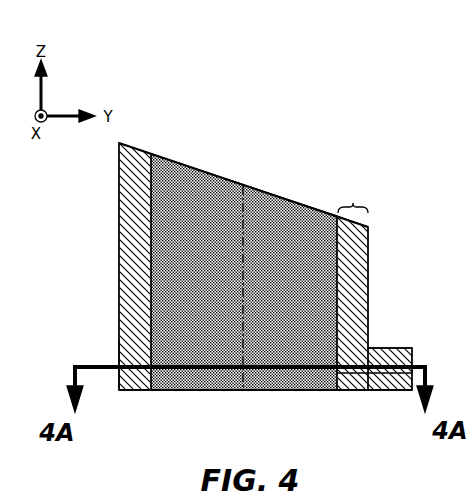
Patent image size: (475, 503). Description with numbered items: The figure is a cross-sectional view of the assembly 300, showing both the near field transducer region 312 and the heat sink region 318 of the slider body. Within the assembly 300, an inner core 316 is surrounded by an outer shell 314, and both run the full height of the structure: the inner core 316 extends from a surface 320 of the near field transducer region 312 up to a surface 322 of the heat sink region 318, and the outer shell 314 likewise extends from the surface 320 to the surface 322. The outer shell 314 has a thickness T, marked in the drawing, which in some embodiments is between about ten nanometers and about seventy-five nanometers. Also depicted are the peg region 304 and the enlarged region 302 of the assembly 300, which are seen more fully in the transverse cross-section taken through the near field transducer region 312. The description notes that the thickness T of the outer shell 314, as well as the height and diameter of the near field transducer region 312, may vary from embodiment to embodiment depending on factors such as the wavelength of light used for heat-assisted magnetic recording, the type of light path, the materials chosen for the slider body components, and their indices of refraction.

The assembly 300 is at (149, 93).
The enlarged region 302 is at (468, 91).
The peg region 304 is at (393, 360).
The near field transducer region 312 is at (117, 354).
The outer shell 314 is at (352, 265).
The inner core 316 is at (203, 198).
The heat sink region 318 is at (117, 210).
The surface of the near field transducer region 320 is at (203, 392).
The surface of the heat sink region 322 is at (277, 196).